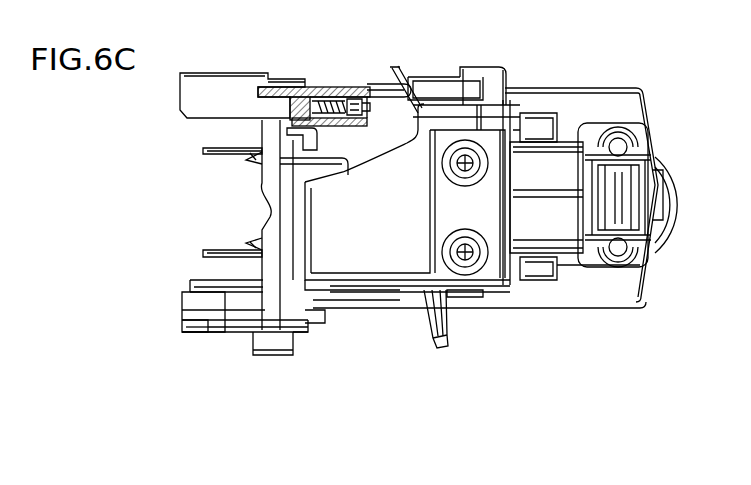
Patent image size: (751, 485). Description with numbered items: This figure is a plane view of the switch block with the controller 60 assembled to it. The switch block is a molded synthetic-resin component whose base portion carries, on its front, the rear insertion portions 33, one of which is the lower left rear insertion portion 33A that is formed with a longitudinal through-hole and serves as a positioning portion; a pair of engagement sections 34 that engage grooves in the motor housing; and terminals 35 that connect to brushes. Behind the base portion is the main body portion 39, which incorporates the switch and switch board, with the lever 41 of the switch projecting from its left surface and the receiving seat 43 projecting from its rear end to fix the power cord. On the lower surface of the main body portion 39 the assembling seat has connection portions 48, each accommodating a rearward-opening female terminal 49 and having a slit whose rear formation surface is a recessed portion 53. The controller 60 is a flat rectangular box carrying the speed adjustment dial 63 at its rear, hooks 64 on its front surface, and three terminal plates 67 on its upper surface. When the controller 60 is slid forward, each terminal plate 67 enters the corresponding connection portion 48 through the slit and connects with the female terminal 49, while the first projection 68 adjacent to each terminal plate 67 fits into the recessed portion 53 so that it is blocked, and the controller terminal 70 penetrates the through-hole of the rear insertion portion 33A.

The rear insertion portion 33 is at (217, 84).
The lower left rear insertion portion 33A is at (238, 318).
The engagement section 34 is at (236, 256).
The terminal 35 is at (203, 149).
The main body portion 39 is at (383, 263).
The lever 41 is at (440, 348).
The receiving seat 43 is at (648, 243).
The connection portion 48 is at (298, 86).
The female terminal 49 is at (324, 88).
The recessed portion 53 is at (358, 97).
The controller 60 is at (621, 84).
The speed adjustment dial 63 is at (680, 206).
The hook 64 is at (250, 161).
The terminal plate 67 is at (349, 94).
The first projection 68 is at (376, 96).
The controller terminal 70 is at (215, 330).